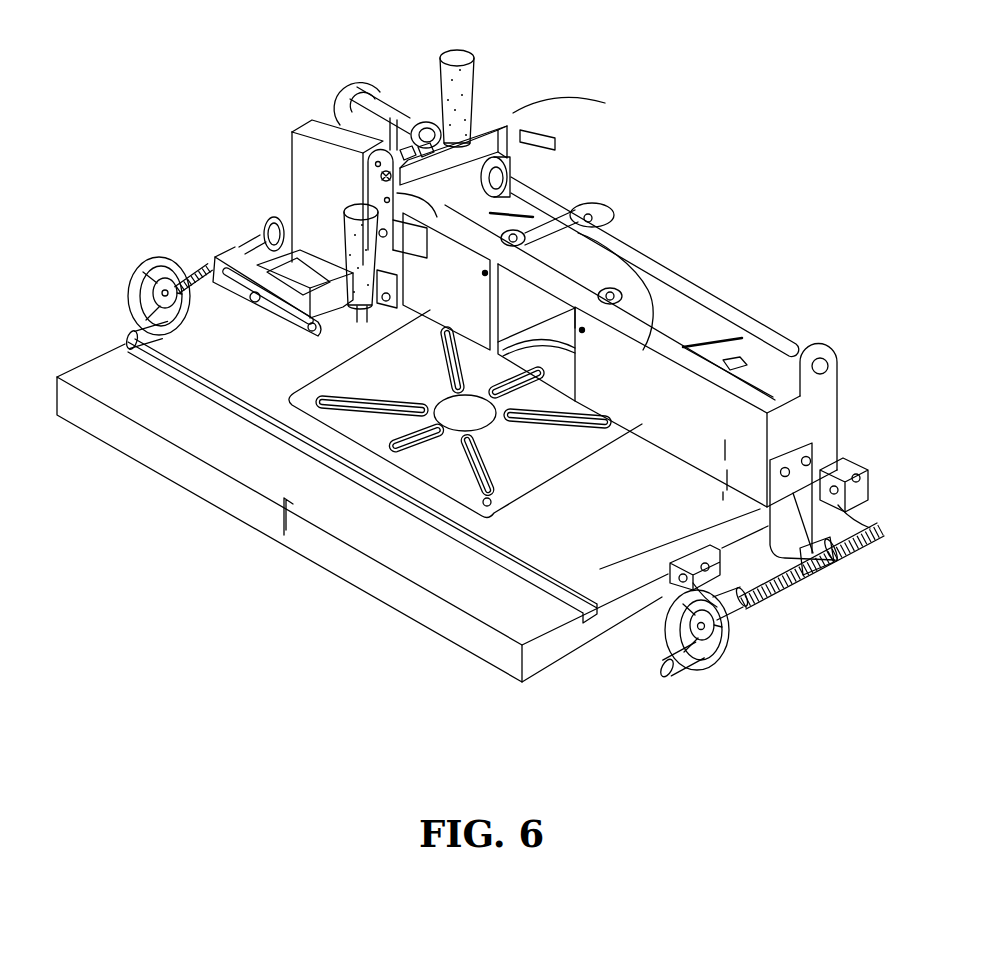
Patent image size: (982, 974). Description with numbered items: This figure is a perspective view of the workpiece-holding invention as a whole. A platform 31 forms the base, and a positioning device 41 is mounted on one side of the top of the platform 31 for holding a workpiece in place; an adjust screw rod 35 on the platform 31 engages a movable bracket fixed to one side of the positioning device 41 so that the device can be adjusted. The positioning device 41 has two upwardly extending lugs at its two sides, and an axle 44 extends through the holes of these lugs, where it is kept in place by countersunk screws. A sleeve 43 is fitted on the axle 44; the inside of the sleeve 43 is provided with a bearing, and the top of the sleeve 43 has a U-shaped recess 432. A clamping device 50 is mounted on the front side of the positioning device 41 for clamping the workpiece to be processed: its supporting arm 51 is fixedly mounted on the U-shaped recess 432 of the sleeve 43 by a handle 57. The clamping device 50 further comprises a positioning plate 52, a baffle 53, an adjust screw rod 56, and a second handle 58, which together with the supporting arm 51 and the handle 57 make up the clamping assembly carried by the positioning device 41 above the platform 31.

The platform 31 is at (438, 578).
The adjust screw rod 35 is at (740, 640).
The positioning device 41 is at (690, 418).
The sleeve 43 is at (513, 170).
The U-shaped recess 432 is at (560, 132).
The axle 44 is at (688, 288).
The clamping device 50 is at (268, 183).
The supporting arm 51 is at (500, 130).
The positioning plate 52 is at (291, 132).
The baffle 53 is at (380, 150).
The adjust screw rod 56 is at (130, 265).
The handle 57 is at (477, 73).
The handle 58 is at (343, 227).